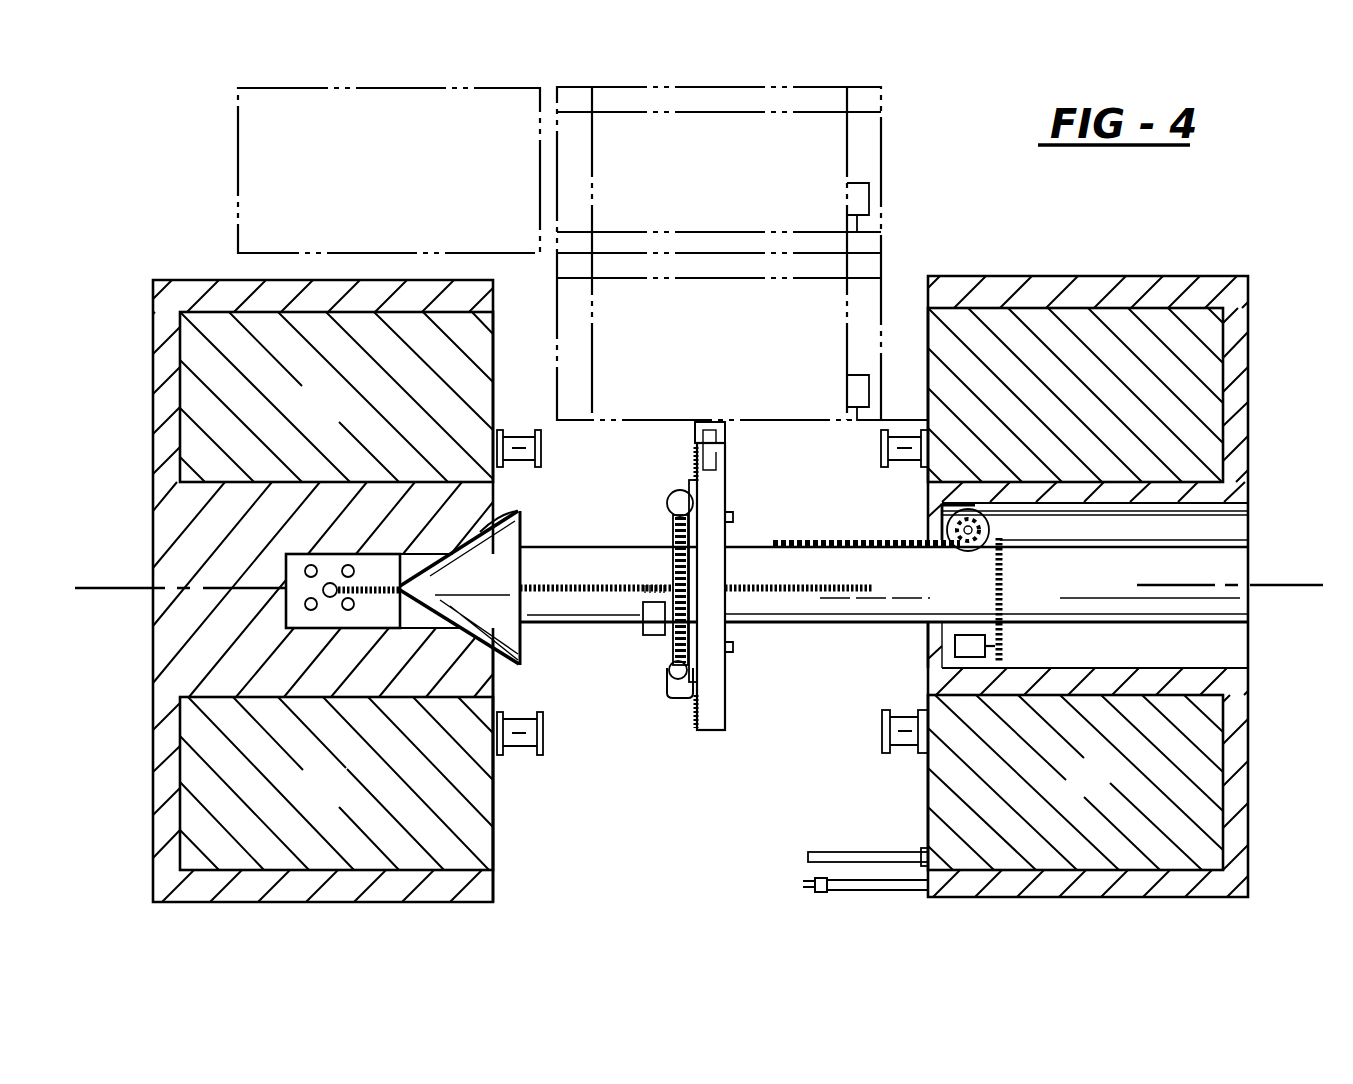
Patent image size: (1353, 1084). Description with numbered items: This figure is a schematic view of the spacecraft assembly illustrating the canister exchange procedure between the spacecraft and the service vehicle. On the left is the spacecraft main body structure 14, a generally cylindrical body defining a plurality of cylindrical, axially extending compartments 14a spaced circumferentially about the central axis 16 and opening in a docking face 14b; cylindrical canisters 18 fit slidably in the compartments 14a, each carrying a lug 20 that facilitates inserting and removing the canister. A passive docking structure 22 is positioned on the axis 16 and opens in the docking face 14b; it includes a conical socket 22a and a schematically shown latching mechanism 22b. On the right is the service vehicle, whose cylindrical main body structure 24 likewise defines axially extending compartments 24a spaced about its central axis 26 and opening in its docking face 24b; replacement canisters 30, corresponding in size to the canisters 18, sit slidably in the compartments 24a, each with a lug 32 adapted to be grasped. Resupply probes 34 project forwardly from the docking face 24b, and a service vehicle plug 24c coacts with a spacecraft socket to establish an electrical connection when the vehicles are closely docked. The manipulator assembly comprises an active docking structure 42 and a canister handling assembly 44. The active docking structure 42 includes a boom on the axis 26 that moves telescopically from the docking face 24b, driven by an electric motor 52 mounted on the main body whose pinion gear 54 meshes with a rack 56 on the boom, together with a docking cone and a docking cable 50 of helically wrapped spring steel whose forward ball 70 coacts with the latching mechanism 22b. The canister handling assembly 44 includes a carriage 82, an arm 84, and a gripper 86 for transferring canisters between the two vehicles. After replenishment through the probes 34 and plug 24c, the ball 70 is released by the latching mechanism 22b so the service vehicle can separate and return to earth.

The main body structure 14 is at (160, 278).
The compartments 14a is at (380, 310).
The docking face 14b is at (497, 880).
The central axis 16 is at (107, 588).
The canisters 18 is at (338, 413).
The lug 20 is at (516, 764).
The passive docking structure 22 is at (283, 563).
The conical socket 22a is at (490, 538).
The latching mechanism 22b is at (292, 603).
The main body structure 24 is at (1113, 276).
The compartments 24a is at (1000, 305).
The docking face 24b is at (930, 673).
The plug 24c is at (828, 893).
The central axis 26 is at (1282, 585).
The replacement canisters 30 is at (1102, 788).
The lug 32 is at (882, 733).
The resupply probes 34 is at (833, 850).
The active docking structure 42 is at (862, 635).
The canister handling assembly 44 is at (752, 517).
The docking cable 50 is at (470, 650).
The electric motor 52 is at (992, 533).
The pinion gear 54 is at (952, 550).
The rack 56 is at (845, 545).
The ball 70 is at (332, 583).
The carriage 82 is at (688, 693).
The arm 84 is at (715, 668).
The gripper 86 is at (693, 425).